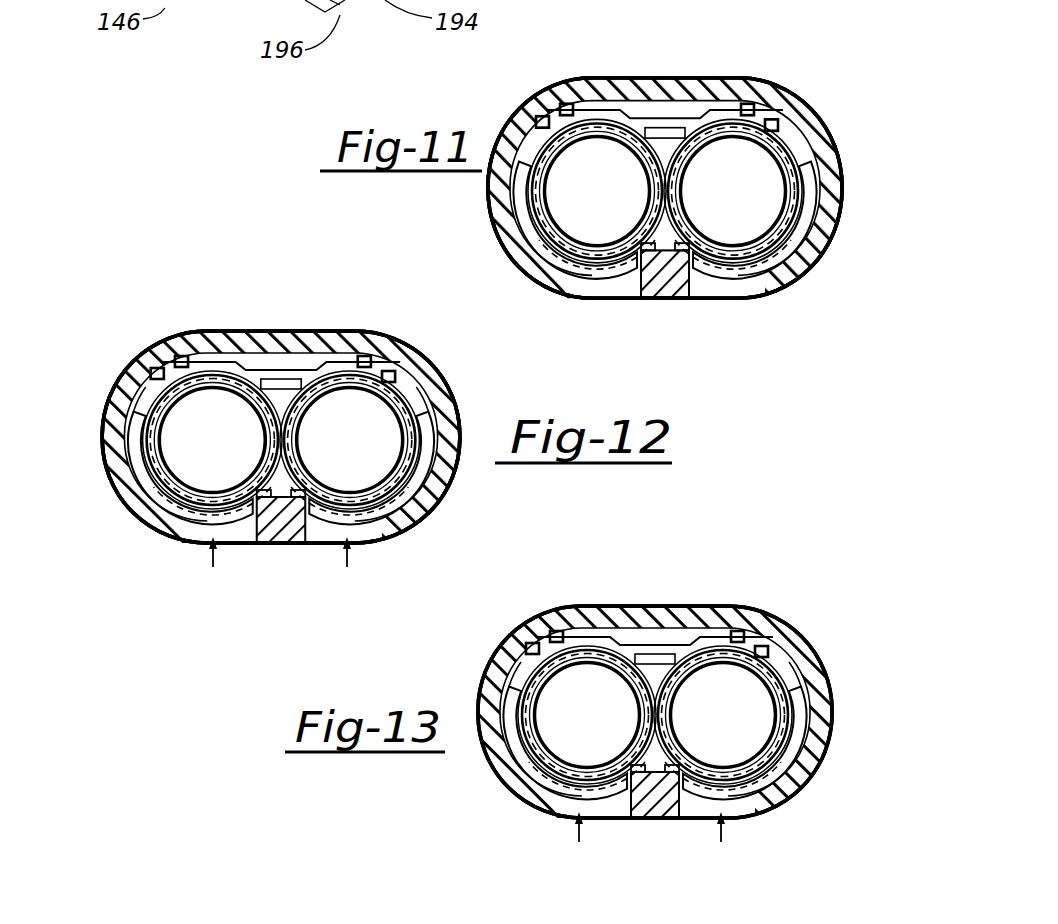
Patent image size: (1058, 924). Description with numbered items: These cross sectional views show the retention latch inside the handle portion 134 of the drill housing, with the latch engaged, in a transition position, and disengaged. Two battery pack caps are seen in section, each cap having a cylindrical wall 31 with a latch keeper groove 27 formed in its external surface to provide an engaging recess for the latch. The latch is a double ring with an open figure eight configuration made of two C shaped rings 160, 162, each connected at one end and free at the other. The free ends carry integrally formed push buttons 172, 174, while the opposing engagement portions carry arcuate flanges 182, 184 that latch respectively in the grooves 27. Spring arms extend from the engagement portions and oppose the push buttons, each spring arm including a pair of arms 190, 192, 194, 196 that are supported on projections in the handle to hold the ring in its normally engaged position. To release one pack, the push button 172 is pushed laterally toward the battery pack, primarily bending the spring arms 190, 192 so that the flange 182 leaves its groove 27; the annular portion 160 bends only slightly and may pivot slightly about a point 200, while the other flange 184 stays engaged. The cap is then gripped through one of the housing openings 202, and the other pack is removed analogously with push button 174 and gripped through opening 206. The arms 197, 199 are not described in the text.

In FIG. 11, the latch keeper groove 27 is at (665, 191).
In FIG. 12, the latch keeper groove 27 is at (281, 440).
In FIG. 13, the latch keeper groove 27 is at (655, 715).
In FIG. 11, the cylindrical wall 31 is at (665, 191).
In FIG. 12, the cylindrical wall 31 is at (280, 440).
In FIG. 13, the cylindrical wall 31 is at (655, 715).
In FIG. 11, the handle portion 134 is at (708, 188).
In FIG. 12, the handle portion 134 is at (315, 437).
In FIG. 11, the ring 160 is at (648, 196).
In FIG. 12, the ring 160 is at (254, 438).
In FIG. 13, the ring 160 is at (621, 712).
In FIG. 11, the ring 162 is at (695, 191).
In FIG. 12, the ring 162 is at (300, 444).
In FIG. 13, the ring 162 is at (684, 716).
In FIG. 11, the push button 172 is at (584, 260).
In FIG. 12, the push button 172 is at (190, 508).
In FIG. 13, the push button 172 is at (563, 774).
In FIG. 11, the push button 174 is at (746, 260).
In FIG. 12, the push button 174 is at (362, 515).
In FIG. 13, the push button 174 is at (736, 774).
In FIG. 11, the arcuate flange 182 is at (665, 62).
In FIG. 12, the arcuate flange 182 is at (281, 323).
In FIG. 13, the arcuate flange 182 is at (655, 599).
In FIG. 11, the arcuate flange 184 is at (697, 77).
In FIG. 12, the arcuate flange 184 is at (322, 326).
In FIG. 13, the arcuate flange 184 is at (723, 605).
In FIG. 11, the spring arm 190 is at (656, 176).
In FIG. 12, the spring arm 190 is at (269, 424).
In FIG. 13, the spring arm 190 is at (637, 703).
In FIG. 11, the spring arm 192 is at (566, 71).
In FIG. 12, the spring arm 192 is at (175, 326).
In FIG. 11, the spring arm 194 is at (785, 80).
In FIG. 11, the spring arm 196 is at (704, 167).
In FIG. 12, the spring arm 196 is at (311, 430).
In FIG. 13, the spring arm 196 is at (695, 700).
In FIG. 13, the first latch 197 is at (526, 608).
In FIG. 12, the second latch 199 is at (406, 329).
In FIG. 13, the second latch 199 is at (796, 611).
In FIG. 12, the pivot point 200 is at (291, 397).
In FIG. 13, the pivot point 200 is at (669, 684).
In FIG. 11, the housing opening 202 is at (648, 303).
In FIG. 12, the housing opening 202 is at (233, 561).
In FIG. 13, the housing opening 202 is at (638, 815).
In FIG. 11, the housing opening 206 is at (687, 309).
In FIG. 12, the housing opening 206 is at (281, 576).
In FIG. 13, the housing opening 206 is at (675, 818).